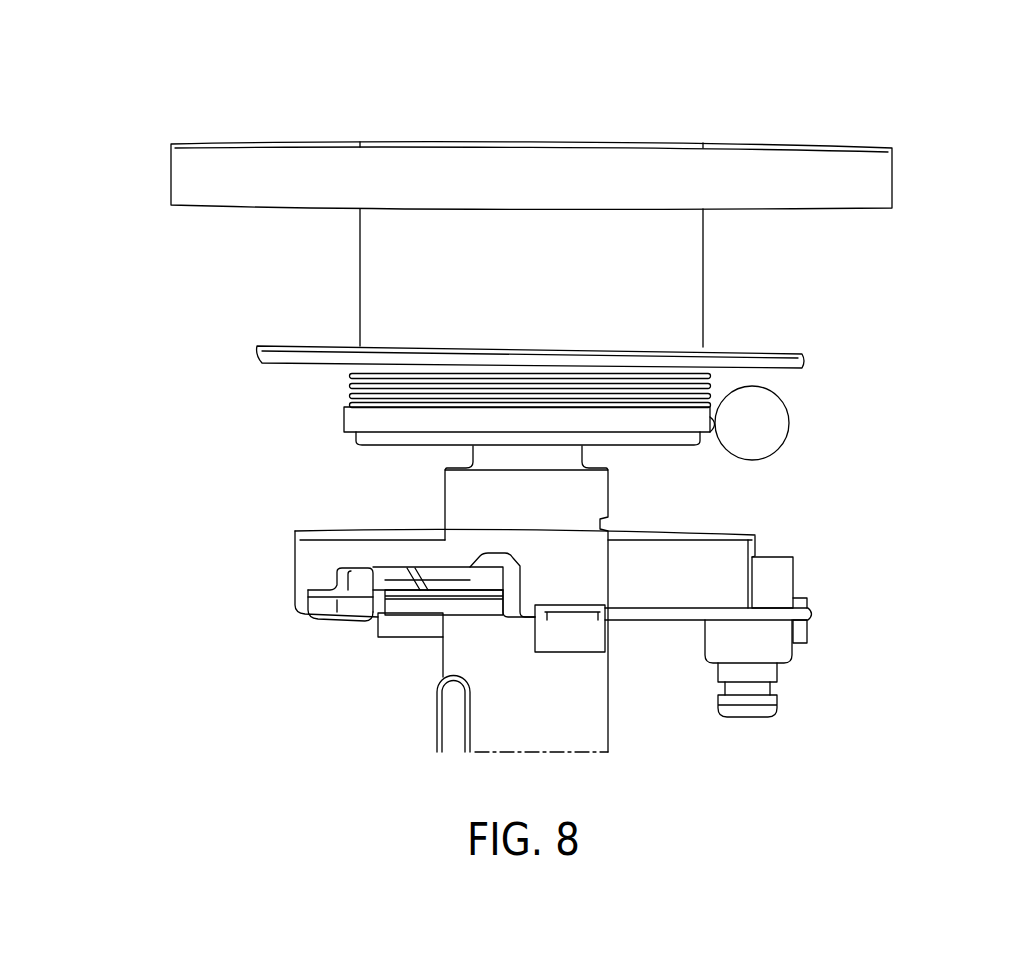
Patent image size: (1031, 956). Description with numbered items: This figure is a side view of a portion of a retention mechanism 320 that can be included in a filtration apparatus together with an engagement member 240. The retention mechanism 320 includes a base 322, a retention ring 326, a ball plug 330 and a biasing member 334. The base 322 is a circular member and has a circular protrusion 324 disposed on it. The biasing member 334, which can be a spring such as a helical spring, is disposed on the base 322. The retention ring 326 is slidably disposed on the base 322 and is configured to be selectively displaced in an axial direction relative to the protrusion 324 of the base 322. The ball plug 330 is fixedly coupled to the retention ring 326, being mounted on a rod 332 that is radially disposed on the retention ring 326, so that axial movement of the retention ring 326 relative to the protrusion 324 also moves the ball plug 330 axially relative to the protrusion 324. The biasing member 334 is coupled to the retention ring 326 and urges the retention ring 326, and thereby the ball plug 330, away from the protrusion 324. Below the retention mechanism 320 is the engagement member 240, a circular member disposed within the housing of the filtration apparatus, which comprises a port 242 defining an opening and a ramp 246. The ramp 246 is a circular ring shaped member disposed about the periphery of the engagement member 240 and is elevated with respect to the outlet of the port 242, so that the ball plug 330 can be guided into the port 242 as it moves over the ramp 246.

The retention mechanism 320 is at (300, 126).
The base 322 is at (882, 177).
The protrusion 324 is at (802, 360).
The biasing member 334 is at (348, 375).
The retention ring 326 is at (343, 420).
The ball plug 330 is at (763, 424).
The rod 332 is at (713, 443).
The engagement member 240 is at (336, 649).
The ramp 246 is at (295, 540).
The port 242 is at (780, 580).